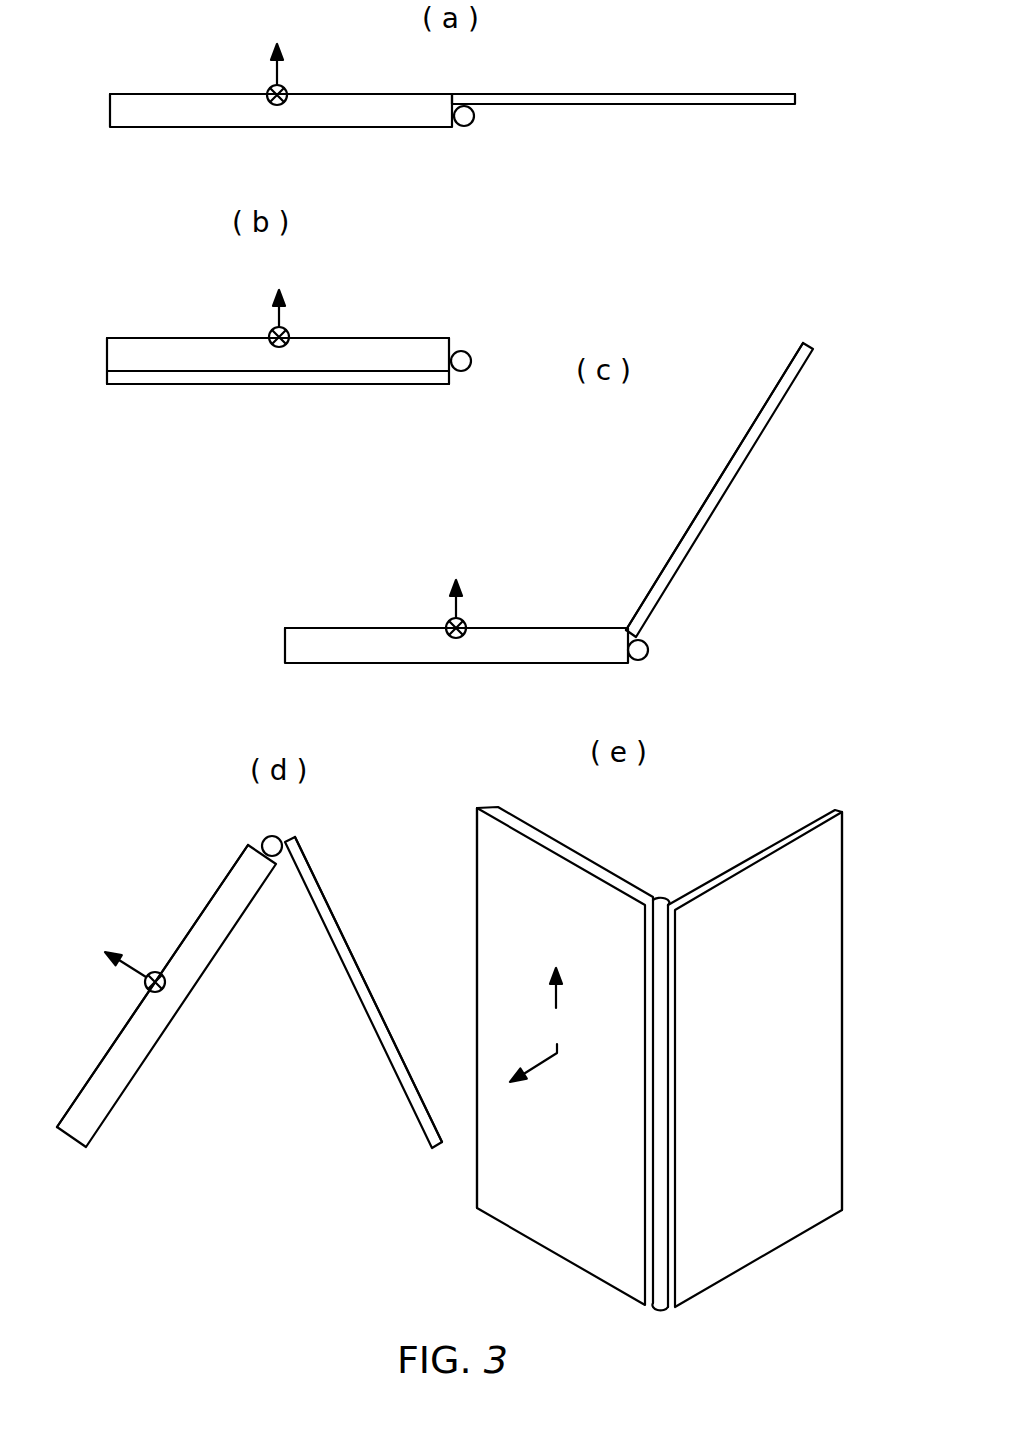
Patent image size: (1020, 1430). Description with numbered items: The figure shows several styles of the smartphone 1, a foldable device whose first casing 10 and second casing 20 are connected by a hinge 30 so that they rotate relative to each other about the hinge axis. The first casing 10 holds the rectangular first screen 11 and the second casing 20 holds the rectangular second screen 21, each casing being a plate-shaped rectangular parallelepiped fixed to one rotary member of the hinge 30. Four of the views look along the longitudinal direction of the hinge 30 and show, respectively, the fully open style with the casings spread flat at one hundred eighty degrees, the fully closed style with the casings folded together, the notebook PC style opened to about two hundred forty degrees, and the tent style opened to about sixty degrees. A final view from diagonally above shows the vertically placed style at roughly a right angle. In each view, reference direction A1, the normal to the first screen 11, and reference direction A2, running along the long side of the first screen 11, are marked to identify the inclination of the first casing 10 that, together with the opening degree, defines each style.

The smartphone 1 is at (678, 79).
The first casing 10 is at (303, 128).
The first screen 11 is at (373, 92).
The second casing 20 is at (634, 104).
The second screen 21 is at (580, 92).
The hinge 30 is at (466, 117).
The reference direction A1 is at (311, 565).
The reference direction A2 is at (340, 556).